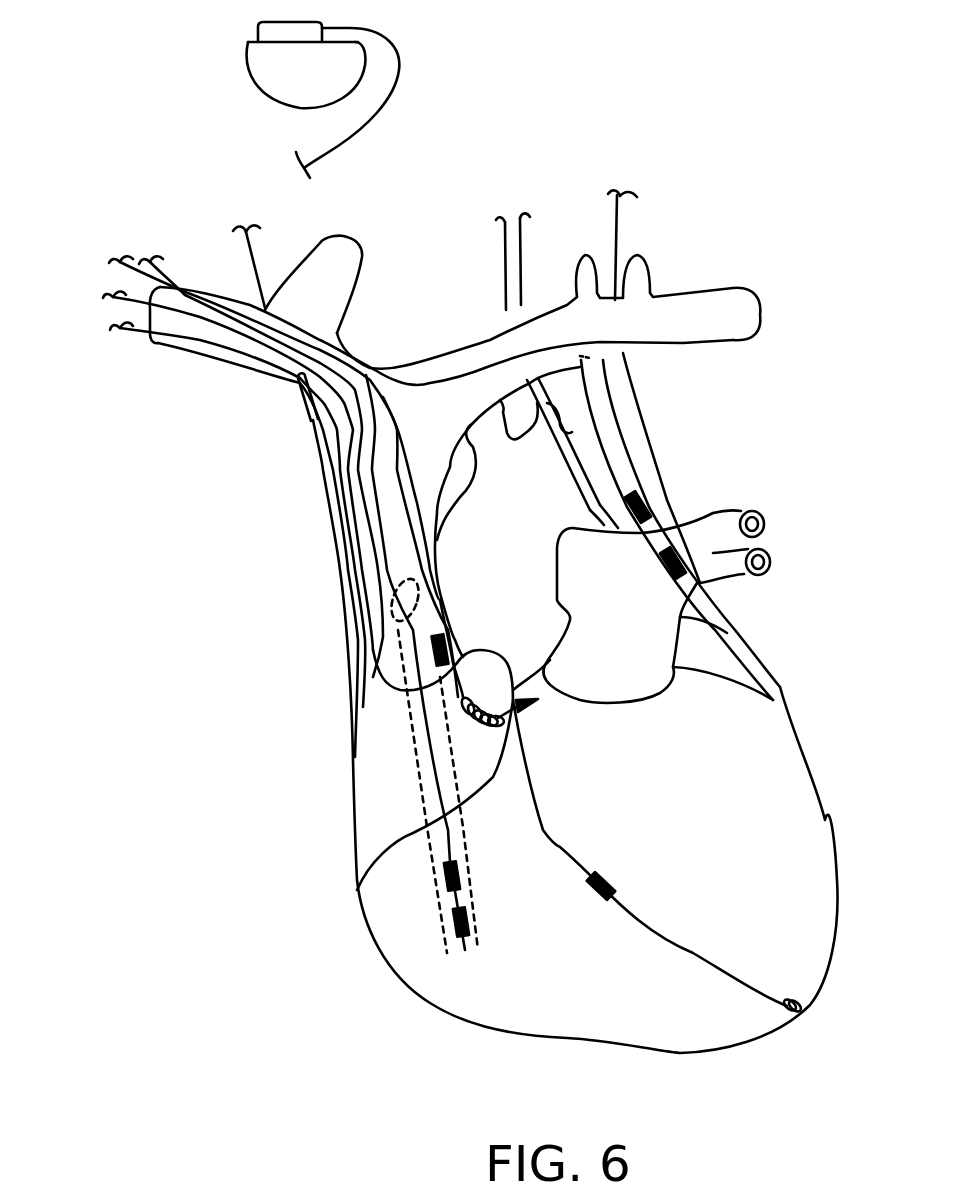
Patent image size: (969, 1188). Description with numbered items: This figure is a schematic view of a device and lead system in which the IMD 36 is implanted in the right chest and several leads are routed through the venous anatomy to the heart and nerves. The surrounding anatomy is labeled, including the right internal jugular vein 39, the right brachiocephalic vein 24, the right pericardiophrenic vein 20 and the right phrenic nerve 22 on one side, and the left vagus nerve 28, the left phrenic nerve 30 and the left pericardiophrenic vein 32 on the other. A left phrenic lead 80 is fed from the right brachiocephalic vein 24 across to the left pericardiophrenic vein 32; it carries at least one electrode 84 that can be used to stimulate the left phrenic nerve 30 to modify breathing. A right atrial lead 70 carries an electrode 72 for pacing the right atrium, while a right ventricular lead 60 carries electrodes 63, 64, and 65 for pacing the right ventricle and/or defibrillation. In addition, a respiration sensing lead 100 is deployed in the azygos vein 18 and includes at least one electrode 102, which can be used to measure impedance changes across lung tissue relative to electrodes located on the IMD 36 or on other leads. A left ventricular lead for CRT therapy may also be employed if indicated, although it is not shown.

The azygos vein 18 is at (430, 768).
The right pericardiophrenic vein 20 is at (320, 418).
The right phrenic nerve 22 is at (253, 243).
The right brachiocephalic vein 24 is at (227, 353).
The left vagus nerve 28 is at (503, 262).
The left phrenic nerve 30 is at (613, 232).
The left pericardiophrenic vein 32 is at (607, 418).
The IMD 36 is at (322, 84).
The right internal jugular vein 39 is at (345, 237).
The right ventricular lead 60 is at (105, 313).
The electrode 63 is at (432, 651).
The electrode 64 is at (610, 880).
The electrode 65 is at (817, 1000).
The right atrial lead 70 is at (137, 263).
The electrode 72 is at (513, 700).
The left phrenic lead 80 is at (167, 282).
The electrode 84 is at (676, 562).
The respiration sensing lead 100 is at (373, 533).
The electrode 102 is at (457, 935).